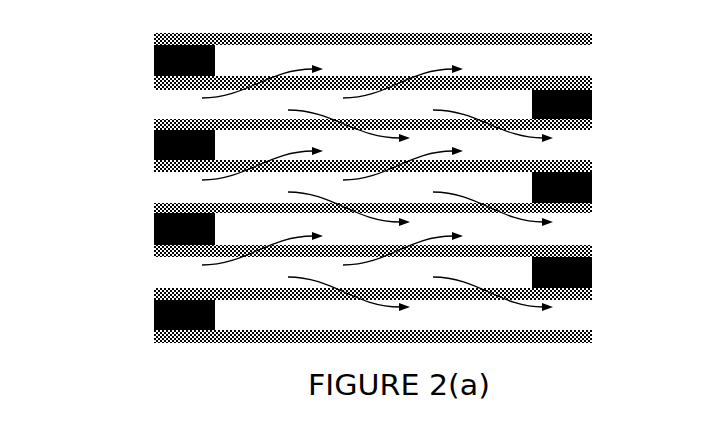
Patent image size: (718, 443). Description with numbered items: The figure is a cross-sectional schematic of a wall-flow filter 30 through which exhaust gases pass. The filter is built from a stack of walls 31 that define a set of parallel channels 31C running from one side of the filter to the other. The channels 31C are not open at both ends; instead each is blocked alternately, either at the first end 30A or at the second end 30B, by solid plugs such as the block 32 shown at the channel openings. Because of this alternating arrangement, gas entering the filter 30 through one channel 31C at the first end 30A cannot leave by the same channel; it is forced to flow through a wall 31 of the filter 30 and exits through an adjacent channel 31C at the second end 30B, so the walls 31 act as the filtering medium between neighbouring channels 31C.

The wall-flow filter 30 is at (614, 318).
The first end 30A is at (128, 32).
The second end 30B is at (616, 190).
The walls 31 is at (593, 120).
The parallel channels 31C is at (168, 272).
The solid block (left-side wall) 32 is at (158, 62).